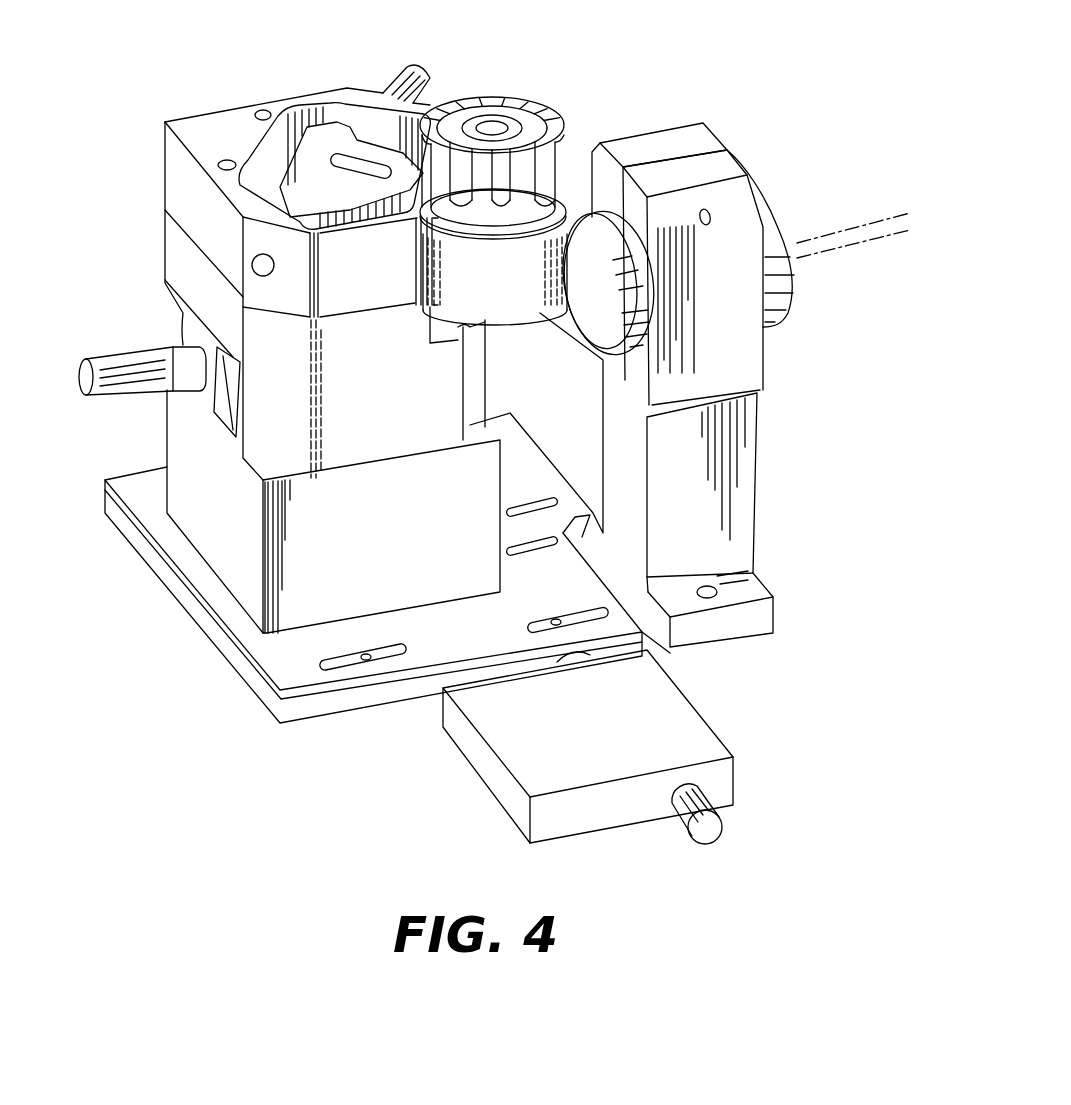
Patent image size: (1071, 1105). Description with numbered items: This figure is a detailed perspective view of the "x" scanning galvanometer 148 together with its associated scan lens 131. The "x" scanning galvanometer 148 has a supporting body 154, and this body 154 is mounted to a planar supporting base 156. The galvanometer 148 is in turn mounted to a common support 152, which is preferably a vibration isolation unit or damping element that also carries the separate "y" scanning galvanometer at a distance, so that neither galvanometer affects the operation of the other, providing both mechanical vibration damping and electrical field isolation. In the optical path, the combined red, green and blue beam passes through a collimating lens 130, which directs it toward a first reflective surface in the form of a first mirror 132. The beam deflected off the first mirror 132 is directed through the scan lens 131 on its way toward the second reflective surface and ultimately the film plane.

The "x" scanning galvanometer 148 is at (108, 105).
The scan lens 131 is at (728, 248).
The first mirror 132 is at (514, 349).
The collimating lens 130 is at (683, 703).
The common support 152 is at (100, 580).
The supporting body 154 is at (317, 560).
The planar supporting base 156 is at (280, 662).